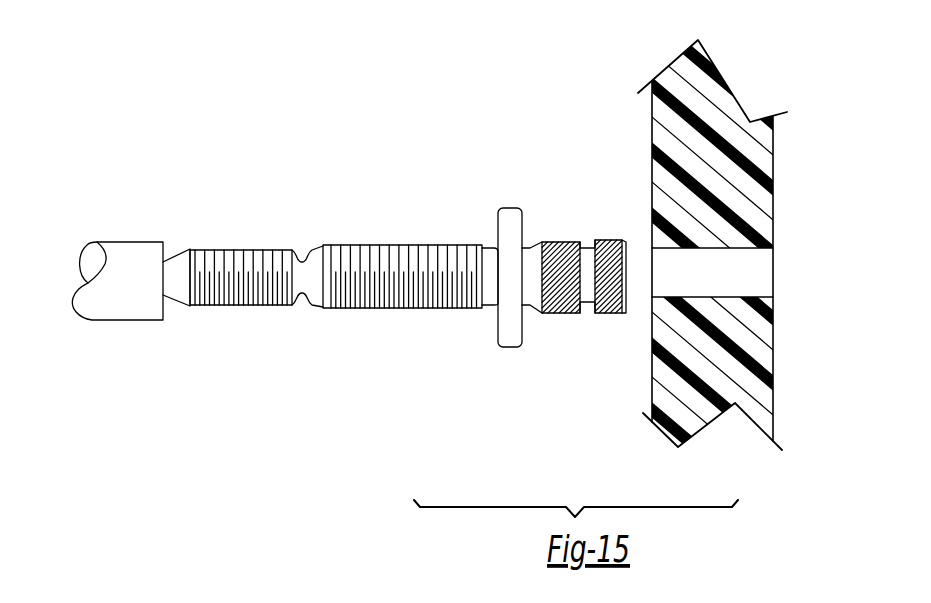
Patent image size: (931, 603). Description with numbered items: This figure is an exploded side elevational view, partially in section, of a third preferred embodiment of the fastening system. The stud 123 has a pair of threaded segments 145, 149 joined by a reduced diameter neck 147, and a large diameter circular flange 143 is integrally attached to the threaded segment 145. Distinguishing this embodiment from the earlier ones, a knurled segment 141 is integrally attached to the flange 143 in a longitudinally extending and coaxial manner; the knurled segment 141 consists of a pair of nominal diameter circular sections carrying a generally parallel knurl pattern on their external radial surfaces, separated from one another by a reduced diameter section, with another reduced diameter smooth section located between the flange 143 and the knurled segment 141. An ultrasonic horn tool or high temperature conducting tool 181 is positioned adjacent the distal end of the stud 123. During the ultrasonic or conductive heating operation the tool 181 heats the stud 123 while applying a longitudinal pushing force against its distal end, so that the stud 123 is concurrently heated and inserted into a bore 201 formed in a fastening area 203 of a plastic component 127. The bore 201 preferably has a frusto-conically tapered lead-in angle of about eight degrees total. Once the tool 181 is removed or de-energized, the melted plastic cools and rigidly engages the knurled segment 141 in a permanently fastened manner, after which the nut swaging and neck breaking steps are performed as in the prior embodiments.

The stud 123 is at (343, 172).
The ultrasonic horn tool or high temperature conducting tool 181 is at (132, 257).
The threaded segment 149 is at (234, 273).
The reduced diameter neck 147 is at (302, 284).
The threaded segment 145 is at (418, 276).
The circular flange 143 is at (513, 216).
The knurled segment 141 is at (562, 254).
The plastic component 127 is at (804, 122).
The fastening area 203 is at (768, 167).
The bore 201 is at (762, 264).